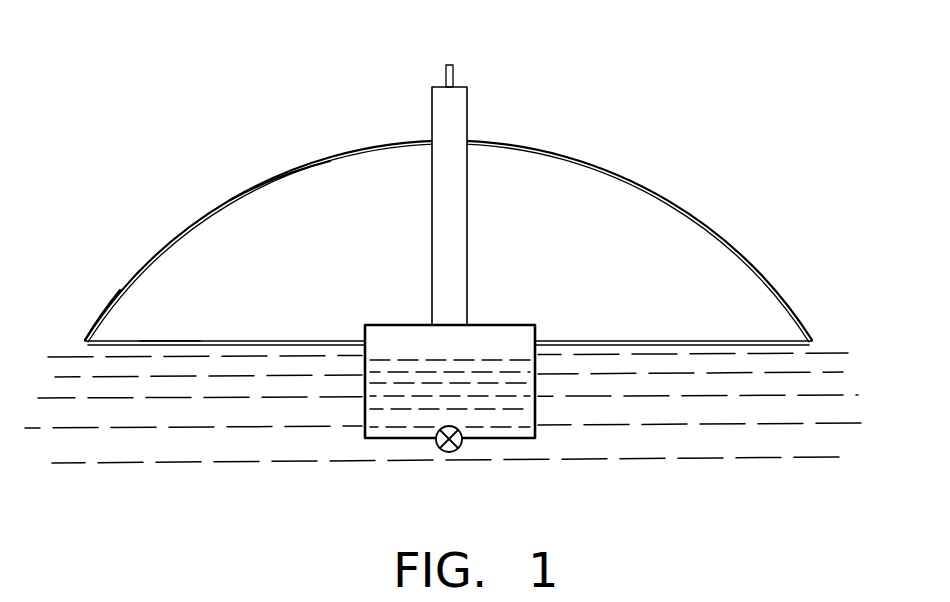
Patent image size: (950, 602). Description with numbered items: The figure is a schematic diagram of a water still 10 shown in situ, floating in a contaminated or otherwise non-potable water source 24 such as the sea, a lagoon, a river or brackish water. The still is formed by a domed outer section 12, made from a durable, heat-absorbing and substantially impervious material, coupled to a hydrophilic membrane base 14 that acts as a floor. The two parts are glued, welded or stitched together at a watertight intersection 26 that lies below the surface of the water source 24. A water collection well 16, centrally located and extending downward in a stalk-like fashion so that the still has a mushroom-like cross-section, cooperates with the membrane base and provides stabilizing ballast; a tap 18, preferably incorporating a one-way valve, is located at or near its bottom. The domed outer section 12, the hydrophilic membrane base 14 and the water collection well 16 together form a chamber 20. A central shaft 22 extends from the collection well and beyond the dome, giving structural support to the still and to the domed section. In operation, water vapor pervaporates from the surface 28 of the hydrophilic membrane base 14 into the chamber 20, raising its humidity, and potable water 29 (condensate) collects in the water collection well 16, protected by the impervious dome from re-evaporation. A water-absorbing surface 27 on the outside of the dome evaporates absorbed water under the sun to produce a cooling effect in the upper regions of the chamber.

The water still 10 is at (296, 90).
The domed outer section 12 is at (640, 178).
The hydrophilic membrane base 14 is at (753, 346).
The water collection well 16 is at (537, 411).
The tap 18 is at (447, 452).
The chamber 20 is at (346, 255).
The central shaft 22 is at (467, 157).
The water source 24 is at (235, 435).
The intersection 26 is at (88, 338).
The water-absorbing surface 27 is at (270, 178).
The surface 28 is at (188, 341).
The potable water 29 is at (500, 410).